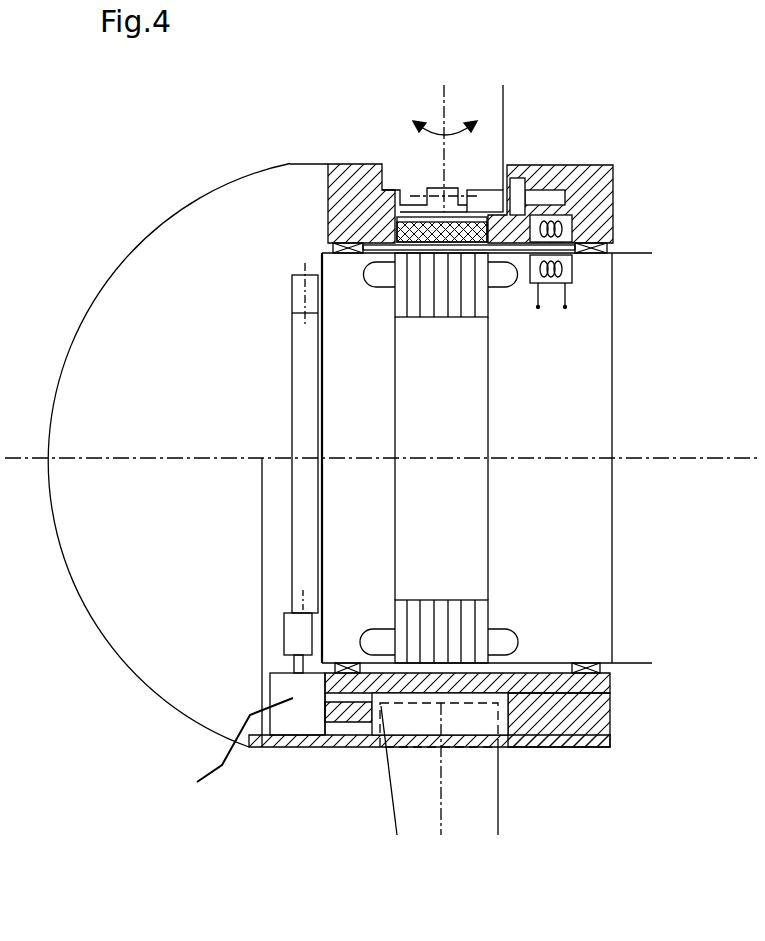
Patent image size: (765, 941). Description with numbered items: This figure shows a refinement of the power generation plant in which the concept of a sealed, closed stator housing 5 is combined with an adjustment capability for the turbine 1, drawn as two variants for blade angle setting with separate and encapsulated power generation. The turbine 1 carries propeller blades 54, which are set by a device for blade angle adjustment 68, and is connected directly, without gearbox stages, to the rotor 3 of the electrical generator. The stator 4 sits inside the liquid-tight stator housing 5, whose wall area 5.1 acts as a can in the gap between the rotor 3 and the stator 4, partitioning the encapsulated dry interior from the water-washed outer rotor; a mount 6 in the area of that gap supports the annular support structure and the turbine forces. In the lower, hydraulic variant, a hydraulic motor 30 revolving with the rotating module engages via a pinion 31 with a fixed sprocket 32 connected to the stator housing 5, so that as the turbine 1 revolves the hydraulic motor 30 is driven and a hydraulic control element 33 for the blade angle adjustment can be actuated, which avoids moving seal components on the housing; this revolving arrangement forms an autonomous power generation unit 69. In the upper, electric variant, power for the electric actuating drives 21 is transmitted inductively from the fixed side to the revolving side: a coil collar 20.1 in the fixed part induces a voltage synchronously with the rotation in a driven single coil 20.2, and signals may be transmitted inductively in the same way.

The turbine 1 is at (478, 97).
The rotor 3 is at (474, 190).
The stator 4 is at (472, 302).
The stator housing 5 is at (612, 330).
The wall area 5.1 is at (415, 217).
The mount 6 is at (353, 238).
The coil collar 20.1 is at (573, 270).
The single coil 20.2 is at (580, 222).
The unit to which power is supplied 21 is at (523, 177).
The hydraulic motor 30 is at (292, 726).
The pinion 31 is at (295, 661).
The sprocket 32 is at (284, 635).
The hydraulic control element 33 is at (380, 727).
The propeller blade 54 is at (481, 795).
The device for blade angle adjustment 68 is at (437, 174).
The autonomous power generation unit 69 is at (226, 751).